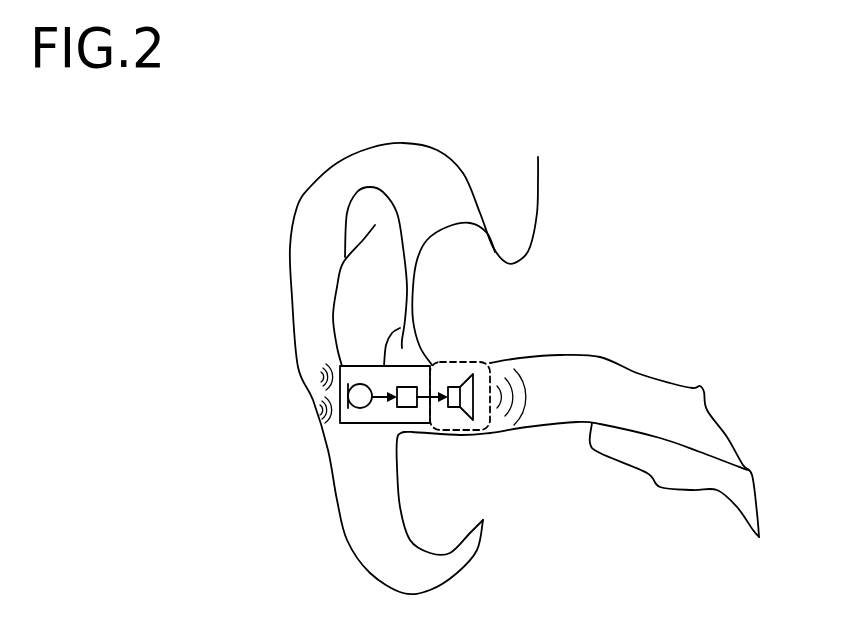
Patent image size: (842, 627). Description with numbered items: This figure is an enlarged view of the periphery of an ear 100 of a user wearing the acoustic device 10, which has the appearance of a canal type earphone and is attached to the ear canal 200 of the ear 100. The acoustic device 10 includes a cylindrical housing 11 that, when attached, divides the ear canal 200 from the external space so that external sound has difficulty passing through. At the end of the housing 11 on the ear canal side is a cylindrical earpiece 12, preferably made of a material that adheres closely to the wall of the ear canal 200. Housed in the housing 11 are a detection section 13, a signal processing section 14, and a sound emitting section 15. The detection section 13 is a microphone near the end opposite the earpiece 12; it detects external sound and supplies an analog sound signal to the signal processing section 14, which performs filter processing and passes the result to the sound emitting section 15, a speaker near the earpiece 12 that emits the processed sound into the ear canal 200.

The ear 100 is at (307, 218).
The ear canal 200 is at (545, 360).
The acoustic device 10 is at (383, 413).
The housing 11 is at (372, 423).
The earpiece 12 is at (487, 377).
The detection section 13 is at (358, 408).
The signal processing section 14 is at (403, 408).
The sound emitting section 15 is at (456, 387).